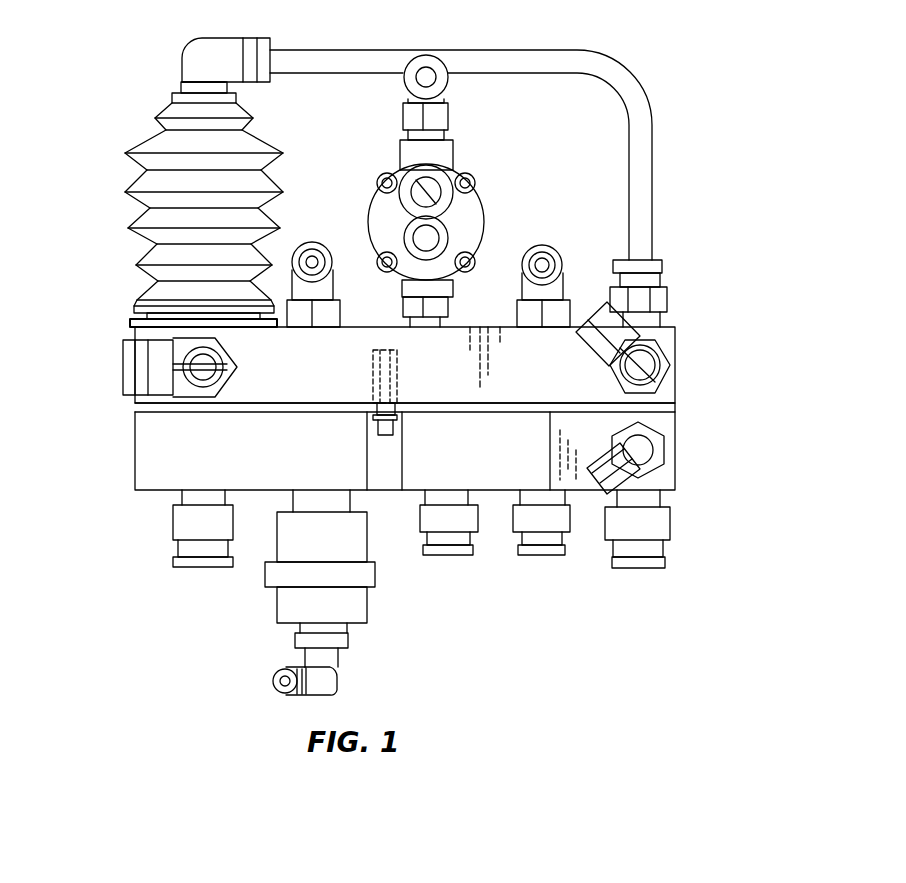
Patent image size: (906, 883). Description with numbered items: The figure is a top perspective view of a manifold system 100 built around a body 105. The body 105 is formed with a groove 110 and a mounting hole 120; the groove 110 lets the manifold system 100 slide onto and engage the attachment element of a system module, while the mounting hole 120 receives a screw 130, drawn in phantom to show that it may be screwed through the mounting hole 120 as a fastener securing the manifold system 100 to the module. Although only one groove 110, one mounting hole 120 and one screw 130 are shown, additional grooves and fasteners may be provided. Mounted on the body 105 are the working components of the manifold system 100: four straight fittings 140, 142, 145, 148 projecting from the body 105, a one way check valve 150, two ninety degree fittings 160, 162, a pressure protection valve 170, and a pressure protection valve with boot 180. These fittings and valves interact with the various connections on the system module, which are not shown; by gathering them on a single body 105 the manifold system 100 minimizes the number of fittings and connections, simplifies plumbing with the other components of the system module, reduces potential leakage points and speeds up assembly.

The manifold system 100 is at (133, 521).
The body 105 is at (150, 463).
The groove 110 is at (148, 408).
The mounting hole 120 is at (388, 463).
The screw 130 is at (377, 380).
The straight fitting 140 is at (202, 547).
The straight fitting 142 is at (453, 522).
The straight fitting 145 is at (540, 517).
The straight fitting 148 is at (638, 522).
The one way check valve 150 is at (305, 607).
The ninety degree fitting 160 is at (608, 328).
The ninety degree fitting 162 is at (627, 457).
The pressure protection valve 170 is at (430, 236).
The pressure protection valve with boot 180 is at (160, 182).